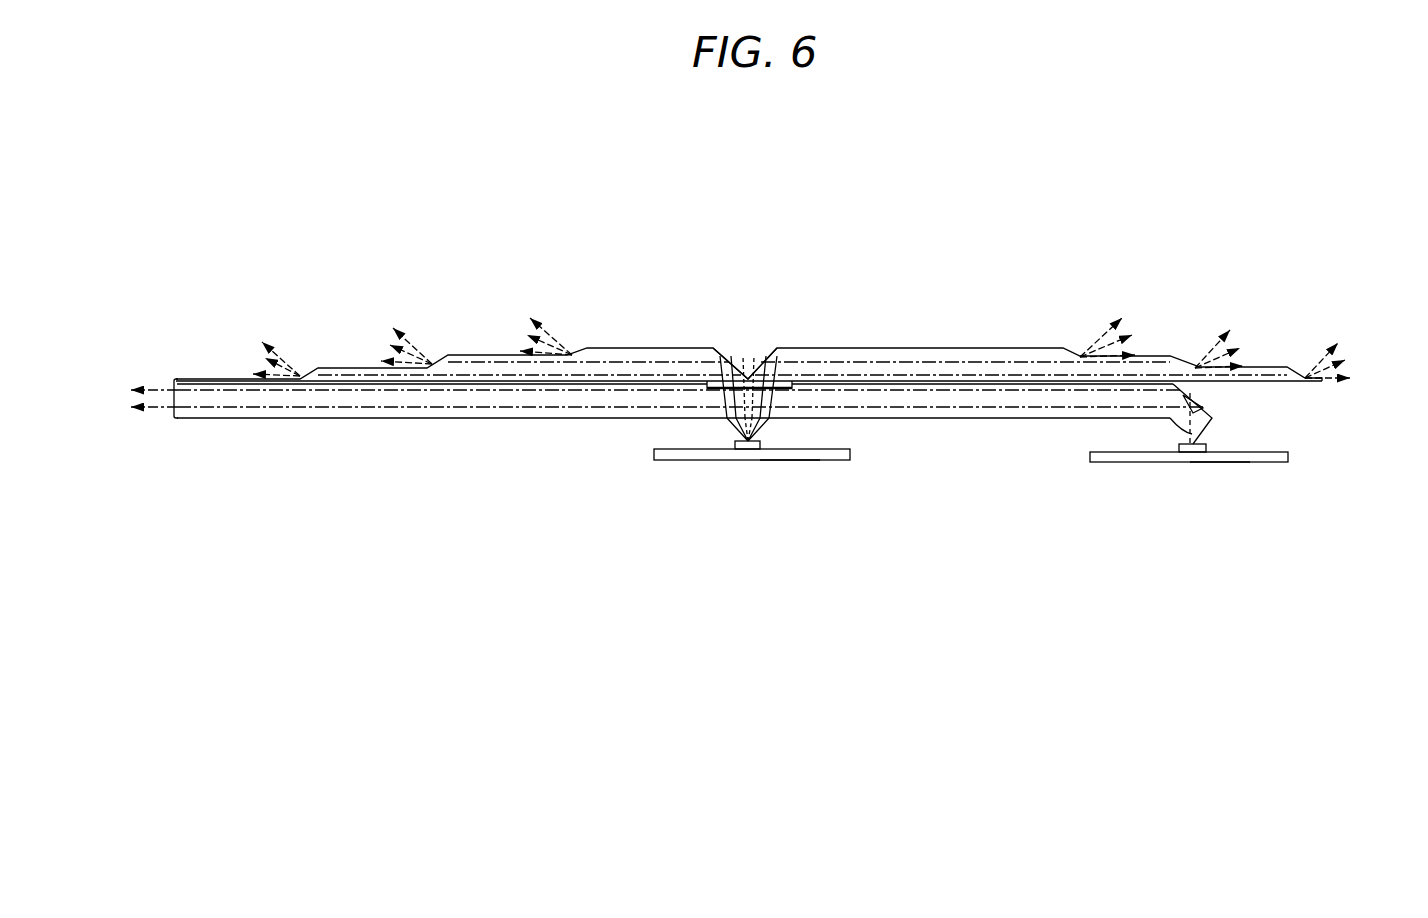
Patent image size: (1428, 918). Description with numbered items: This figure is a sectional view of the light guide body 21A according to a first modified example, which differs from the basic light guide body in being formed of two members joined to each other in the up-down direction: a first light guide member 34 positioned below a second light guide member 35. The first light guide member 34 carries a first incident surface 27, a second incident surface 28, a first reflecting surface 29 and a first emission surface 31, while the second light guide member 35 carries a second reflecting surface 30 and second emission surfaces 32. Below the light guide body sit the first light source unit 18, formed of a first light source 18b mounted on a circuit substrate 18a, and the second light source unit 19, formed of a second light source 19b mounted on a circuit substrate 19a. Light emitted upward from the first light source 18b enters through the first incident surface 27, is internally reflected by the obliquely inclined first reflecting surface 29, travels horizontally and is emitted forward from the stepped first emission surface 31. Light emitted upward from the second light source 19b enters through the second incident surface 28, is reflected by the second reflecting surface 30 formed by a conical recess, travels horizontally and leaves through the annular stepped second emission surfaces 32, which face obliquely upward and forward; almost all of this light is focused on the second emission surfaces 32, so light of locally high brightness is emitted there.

The first light source unit 18 is at (1118, 464).
The circuit substrate 18a is at (1217, 464).
The first light source 18b is at (1207, 447).
The second light source unit 19 is at (690, 462).
The circuit substrate 19a is at (790, 462).
The second light source 19b is at (765, 445).
The light guide body 21A is at (888, 348).
The first incident surface 27 is at (1213, 420).
The second incident surface 28 is at (762, 428).
The first reflecting surface 29 is at (1203, 408).
The second reflecting surface 30 is at (718, 352).
The first emission surface 31 is at (175, 382).
The second emission surfaces 32 is at (314, 372).
The first light guide member 34 is at (957, 420).
The second light guide member 35 is at (1030, 352).